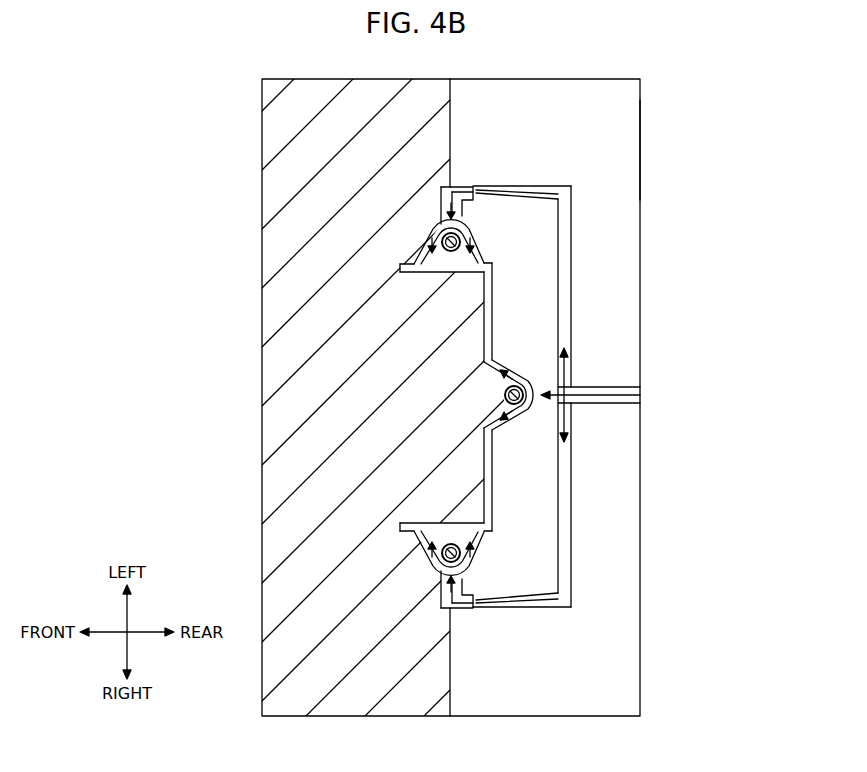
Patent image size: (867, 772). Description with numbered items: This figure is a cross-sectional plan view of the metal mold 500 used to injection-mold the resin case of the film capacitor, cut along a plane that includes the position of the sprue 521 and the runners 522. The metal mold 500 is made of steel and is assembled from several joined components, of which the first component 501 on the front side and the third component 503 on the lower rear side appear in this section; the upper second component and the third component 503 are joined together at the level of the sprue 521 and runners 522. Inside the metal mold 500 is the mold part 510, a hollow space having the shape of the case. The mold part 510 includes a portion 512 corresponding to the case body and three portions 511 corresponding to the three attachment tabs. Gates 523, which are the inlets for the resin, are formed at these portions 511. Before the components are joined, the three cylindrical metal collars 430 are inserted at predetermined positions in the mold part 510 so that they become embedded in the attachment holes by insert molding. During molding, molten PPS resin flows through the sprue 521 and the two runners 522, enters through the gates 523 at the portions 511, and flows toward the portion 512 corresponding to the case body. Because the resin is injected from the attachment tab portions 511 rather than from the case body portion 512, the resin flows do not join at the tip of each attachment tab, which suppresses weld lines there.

The collar 430 is at (476, 397).
The metal mold 500 is at (410, 397).
The first component 501 is at (433, 411).
The third component 503 is at (671, 150).
The mold part 510 is at (485, 396).
The portions corresponding to attachment tabs 511 is at (485, 397).
The portion corresponding to case body 512 is at (509, 397).
The sprue 521 is at (615, 441).
The runners 522 is at (625, 403).
The gates 523 is at (481, 397).